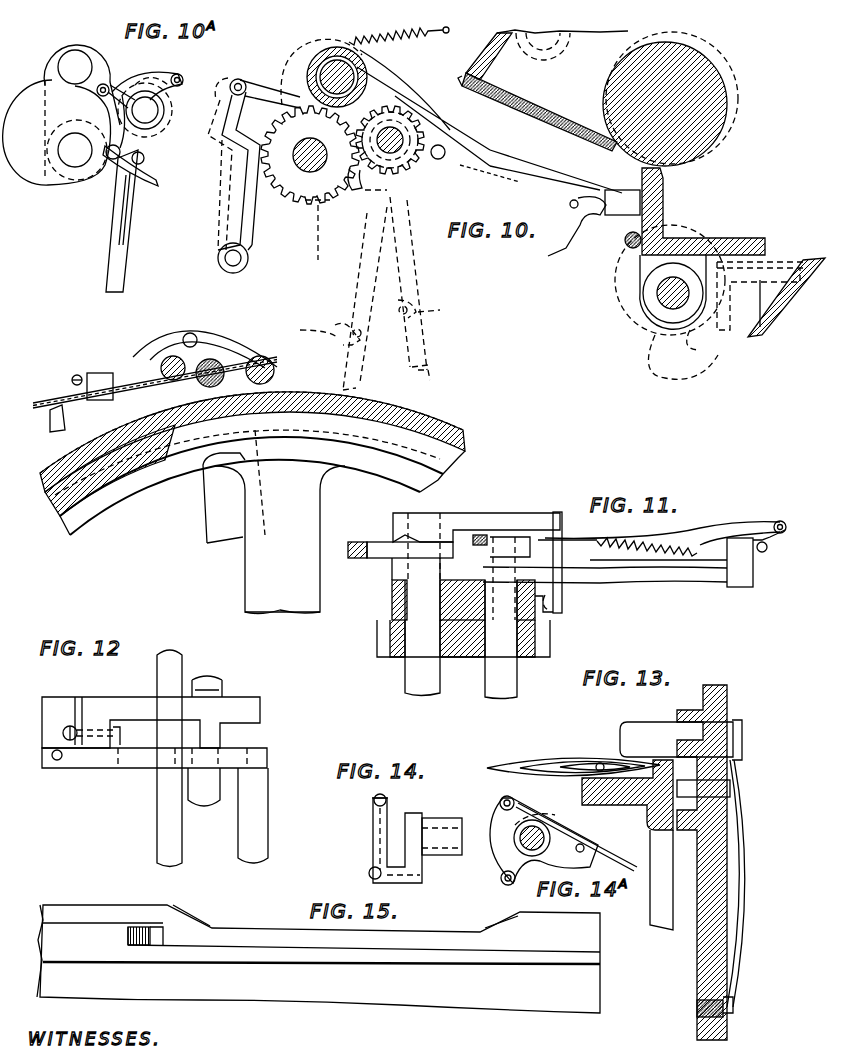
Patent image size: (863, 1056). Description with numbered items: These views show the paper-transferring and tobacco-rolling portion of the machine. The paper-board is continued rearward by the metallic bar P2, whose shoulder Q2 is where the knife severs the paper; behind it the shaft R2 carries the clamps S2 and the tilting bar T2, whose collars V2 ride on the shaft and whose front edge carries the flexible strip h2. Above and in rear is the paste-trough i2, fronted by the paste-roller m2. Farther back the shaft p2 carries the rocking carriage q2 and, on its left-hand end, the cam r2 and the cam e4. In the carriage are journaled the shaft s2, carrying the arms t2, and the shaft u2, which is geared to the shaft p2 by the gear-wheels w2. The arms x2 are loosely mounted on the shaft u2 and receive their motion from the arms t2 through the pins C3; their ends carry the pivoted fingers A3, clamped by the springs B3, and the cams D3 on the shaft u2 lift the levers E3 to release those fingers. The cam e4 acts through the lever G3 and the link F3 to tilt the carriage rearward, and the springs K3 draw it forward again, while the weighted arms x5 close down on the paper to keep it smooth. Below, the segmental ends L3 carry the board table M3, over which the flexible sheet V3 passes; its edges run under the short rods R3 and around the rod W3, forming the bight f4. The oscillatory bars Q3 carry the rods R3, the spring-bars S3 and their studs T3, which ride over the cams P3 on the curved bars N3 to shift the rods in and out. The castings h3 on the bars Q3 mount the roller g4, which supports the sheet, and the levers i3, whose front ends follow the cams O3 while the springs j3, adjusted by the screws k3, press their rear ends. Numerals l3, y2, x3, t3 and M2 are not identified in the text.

In FIG. 10A, the cam r2 is at (57, 132).
In FIG. 10A, the shaft s2 is at (82, 85).
In FIG. 10, the shaft s2 is at (362, 70).
In FIG. 11, the shaft s2 is at (424, 536).
In FIG. 10A, the shaft p2 is at (75, 150).
In FIG. 10, the shaft p2 is at (302, 188).
In FIG. 11, the shaft p2 is at (416, 627).
In FIG. 10A, the shaft u2 is at (145, 110).
In FIG. 10, the shaft u2 is at (420, 136).
In FIG. 11, the shaft u2 is at (501, 639).
In FIG. 10A, the lever E3 is at (156, 75).
In FIG. 11, the lever E3 is at (474, 545).
In FIG. 14, the lever E3 is at (372, 825).
In FIG. 14A, the lever E3 is at (500, 822).
In FIG. 10A, the cam D3 is at (151, 84).
In FIG. 11, the cam D3 is at (510, 578).
In FIG. 14A, the cam D3 is at (542, 815).
In FIG. 10A, the arm t2 is at (120, 172).
In FIG. 11, the arm t2 is at (476, 518).
In FIG. 10A, the pin C3 is at (145, 160).
In FIG. 10, the pin C3 is at (447, 151).
In FIG. 11, the pin C3 is at (561, 512).
In FIG. 14A, the pin C3 is at (583, 844).
In FIG. 10A, the arm x2 is at (122, 221).
In FIG. 10, the arm x2 is at (398, 256).
In FIG. 11, the arm x2 is at (605, 572).
In FIG. 14, the arm x2 is at (442, 836).
In FIG. 14A, the arm x2 is at (545, 839).
In FIG. 10A, the link l3 is at (132, 216).
In FIG. 11, the link l3 is at (752, 518).
In FIG. 14A, the link l3 is at (576, 837).
In FIG. 10, the hub y2 is at (340, 46).
In FIG. 10, the spring K3 is at (400, 26).
In FIG. 10, the arm or link F3 is at (262, 95).
In FIG. 10, the cam e4 is at (250, 178).
In FIG. 11, the cam e4 is at (410, 549).
In FIG. 10, the lever G3 is at (222, 240).
In FIG. 11, the lever G3 is at (347, 552).
In FIG. 10, the gear-wheel w2 is at (427, 178).
In FIG. 11, the gear-wheel w2 is at (377, 635).
In FIG. 14A, the gear-wheel w2 is at (548, 828).
In FIG. 10, the spring j3 is at (356, 190).
In FIG. 11, the spring j3 is at (556, 612).
In FIG. 12, the spring j3 is at (87, 758).
In FIG. 10, the trigger x3 is at (568, 218).
In FIG. 10, the pivoted weighted arm x5 is at (387, 320).
In FIG. 10, the finger A3 is at (430, 373).
In FIG. 11, the finger A3 is at (768, 548).
In FIG. 10, the paste-trough i2 is at (543, 90).
In FIG. 10, the roller M2 is at (670, 99).
In FIG. 10, the paste-roller m2 is at (706, 140).
In FIG. 10, the strip of flexible material h2 is at (664, 170).
In FIG. 10, the bar T2 is at (663, 212).
In FIG. 10, the clamp S2 is at (626, 239).
In FIG. 10, the collar V2 is at (630, 277).
In FIG. 10, the shaft R2 is at (650, 320).
In FIG. 10, the shoulder Q2 is at (805, 260).
In FIG. 10, the metallic bar P2 is at (786, 340).
In FIG. 10, the board table M3 is at (460, 441).
In FIG. 13, the board table M3 is at (494, 770).
In FIG. 10, the segmental end or frame L3 is at (262, 525).
In FIG. 13, the segmental end or frame L3 is at (650, 828).
In FIG. 15, the segmental end or frame L3 is at (318, 959).
In FIG. 10, the oscillatory bar Q3 is at (234, 486).
In FIG. 13, the oscillatory bar Q3 is at (700, 870).
In FIG. 10, the cover t3 is at (205, 348).
In FIG. 10, the roller g4 is at (166, 372).
In FIG. 12, the roller g4 is at (173, 746).
In FIG. 10, the casting h3 is at (198, 379).
In FIG. 12, the casting h3 is at (151, 712).
In FIG. 13, the casting h3 is at (735, 680).
In FIG. 10, the rod or roller W3 is at (275, 371).
In FIG. 12, the rod or roller W3 is at (253, 815).
In FIG. 10, the fold or bight f4 is at (237, 380).
In FIG. 10, the flexible sheet V3 is at (42, 401).
In FIG. 10, the screw k3 is at (81, 401).
In FIG. 12, the screw k3 is at (50, 756).
In FIG. 11, the spring B3 is at (674, 547).
In FIG. 11, the rocking carriage q2 is at (392, 598).
In FIG. 12, the lever i3 is at (154, 758).
In FIG. 12, the short rod or stud R3 is at (204, 787).
In FIG. 13, the short rod or stud R3 is at (681, 740).
In FIG. 13, the stud T3 is at (732, 785).
In FIG. 13, the spring-bar S3 is at (748, 868).
In FIG. 15, the cam O3 is at (152, 936).
In FIG. 15, the cam P3 is at (198, 918).
In FIG. 15, the curved bar N3 is at (575, 937).